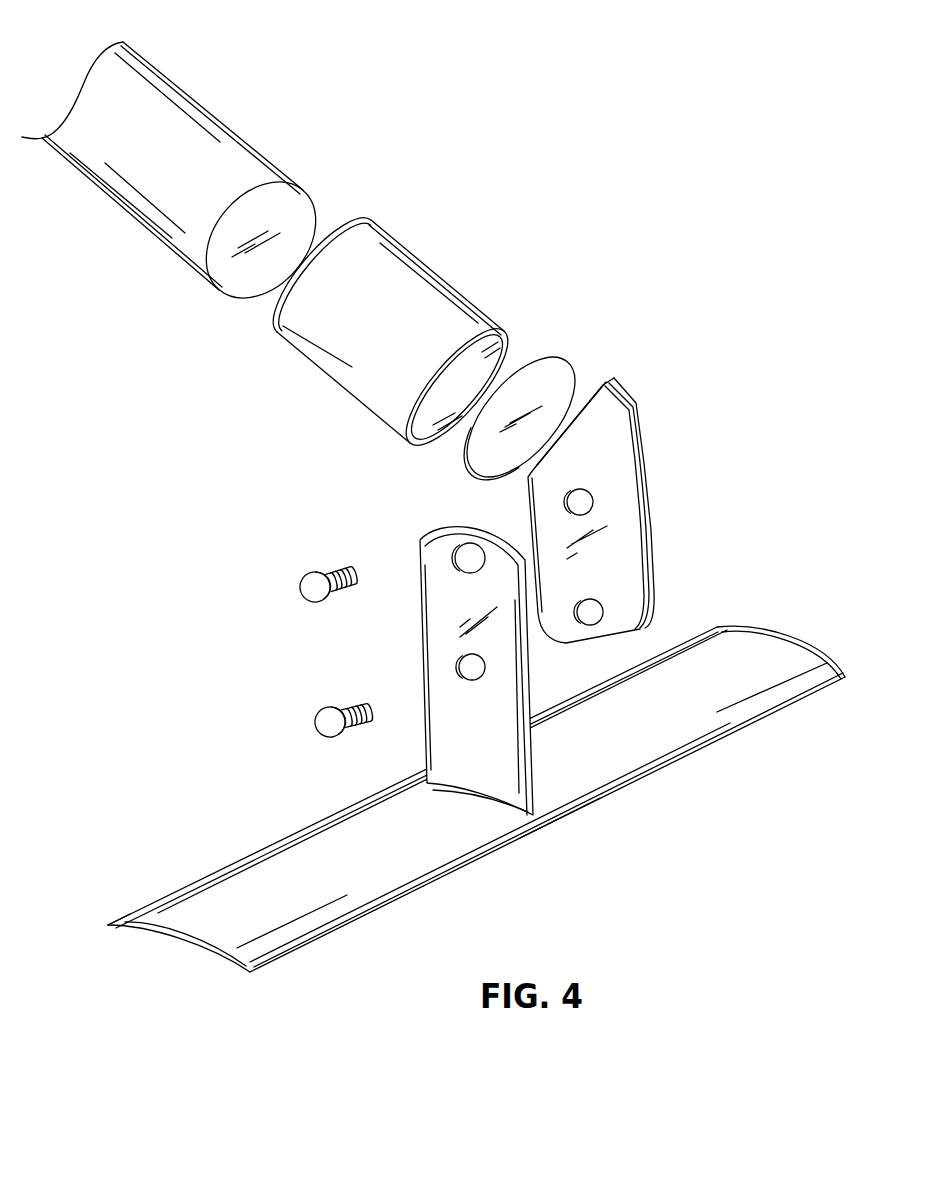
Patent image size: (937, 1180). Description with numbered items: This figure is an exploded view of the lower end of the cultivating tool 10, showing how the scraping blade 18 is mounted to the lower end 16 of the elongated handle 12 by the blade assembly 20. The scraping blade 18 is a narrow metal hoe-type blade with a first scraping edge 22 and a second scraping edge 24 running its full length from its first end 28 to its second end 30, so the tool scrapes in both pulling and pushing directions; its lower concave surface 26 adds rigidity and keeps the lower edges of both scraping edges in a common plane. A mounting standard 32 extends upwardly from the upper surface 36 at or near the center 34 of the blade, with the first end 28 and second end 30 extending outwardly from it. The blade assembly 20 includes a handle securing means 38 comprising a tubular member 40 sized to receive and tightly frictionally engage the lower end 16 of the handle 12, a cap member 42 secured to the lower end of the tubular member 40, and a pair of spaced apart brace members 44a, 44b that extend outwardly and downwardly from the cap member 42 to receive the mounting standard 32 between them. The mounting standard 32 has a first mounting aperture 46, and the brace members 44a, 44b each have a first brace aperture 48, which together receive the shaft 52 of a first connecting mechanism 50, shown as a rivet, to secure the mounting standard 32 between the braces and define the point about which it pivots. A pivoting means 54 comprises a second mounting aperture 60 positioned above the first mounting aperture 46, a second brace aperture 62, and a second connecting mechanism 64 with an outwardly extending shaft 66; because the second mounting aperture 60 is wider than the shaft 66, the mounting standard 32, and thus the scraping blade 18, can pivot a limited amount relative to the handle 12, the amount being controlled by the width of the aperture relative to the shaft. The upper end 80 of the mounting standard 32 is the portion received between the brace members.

The cultivating tool 10 is at (610, 316).
The handle 12 is at (140, 90).
The lower end 16 is at (190, 284).
The scraping blade 18 is at (650, 733).
The blade assembly 20 is at (366, 456).
The first scraping edge 22 is at (202, 880).
The second scraping edge 24 is at (310, 946).
The lower concave surface 26 is at (188, 946).
The first end 28 is at (113, 919).
The second end 30 is at (848, 686).
The mounting standard 32 is at (452, 625).
The center 34 is at (553, 836).
The upper surface 36 is at (285, 876).
The handle securing means 38 is at (435, 247).
The tubular member 40 is at (433, 323).
The cap member 42 is at (550, 387).
The brace member 44a is at (607, 435).
The brace member 44b is at (642, 527).
The first mounting aperture 46 is at (462, 678).
The first brace aperture 48 is at (602, 608).
The first connecting mechanism 50 is at (333, 723).
The shaft 52 is at (353, 701).
The pivoting means 54 is at (297, 547).
The second mounting aperture 60 is at (452, 563).
The second brace aperture 62 is at (567, 503).
The second connecting mechanism 64 is at (313, 585).
The shaft 66 is at (343, 566).
The upper end 80 is at (412, 542).